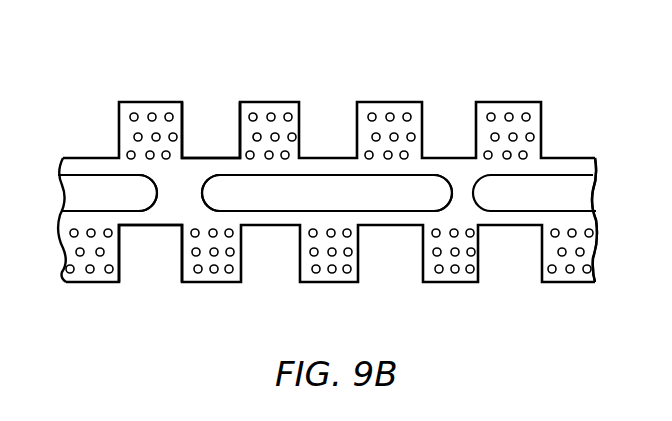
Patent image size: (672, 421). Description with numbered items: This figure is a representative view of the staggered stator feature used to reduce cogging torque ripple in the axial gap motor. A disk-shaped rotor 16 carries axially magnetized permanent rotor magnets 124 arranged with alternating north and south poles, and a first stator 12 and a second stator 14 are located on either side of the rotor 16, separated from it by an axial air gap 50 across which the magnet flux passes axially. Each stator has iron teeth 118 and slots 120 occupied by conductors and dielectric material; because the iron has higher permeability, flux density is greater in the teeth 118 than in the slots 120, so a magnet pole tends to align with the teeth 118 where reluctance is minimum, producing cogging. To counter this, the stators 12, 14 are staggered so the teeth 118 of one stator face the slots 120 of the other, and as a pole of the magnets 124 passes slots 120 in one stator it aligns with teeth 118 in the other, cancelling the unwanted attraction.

The stator 12 is at (342, 86).
The stator 14 is at (318, 321).
The rotor 16 is at (621, 222).
The axial air gap 50 is at (77, 170).
The stator teeth 118 is at (212, 120).
The slots 120 is at (404, 103).
The rotor magnets 124 is at (358, 188).